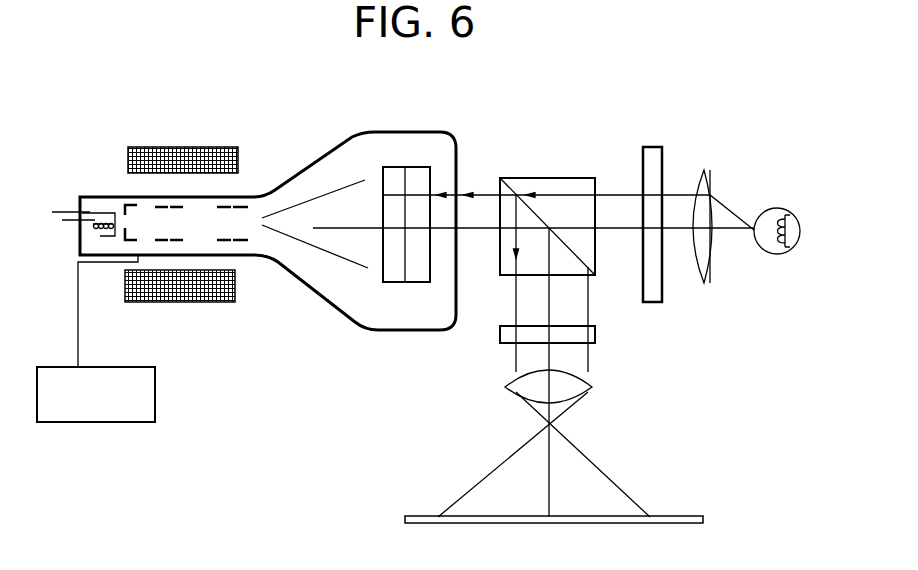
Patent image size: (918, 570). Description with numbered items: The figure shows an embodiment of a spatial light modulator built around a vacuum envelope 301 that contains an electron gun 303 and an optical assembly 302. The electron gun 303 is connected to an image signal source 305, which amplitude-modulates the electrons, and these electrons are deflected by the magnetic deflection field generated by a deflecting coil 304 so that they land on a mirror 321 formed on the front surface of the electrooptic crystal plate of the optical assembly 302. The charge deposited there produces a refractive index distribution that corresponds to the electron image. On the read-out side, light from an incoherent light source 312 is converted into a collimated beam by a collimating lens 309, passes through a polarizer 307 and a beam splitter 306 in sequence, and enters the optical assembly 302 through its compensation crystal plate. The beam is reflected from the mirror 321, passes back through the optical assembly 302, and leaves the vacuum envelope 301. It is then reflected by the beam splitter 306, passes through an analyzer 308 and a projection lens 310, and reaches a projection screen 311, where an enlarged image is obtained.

The envelope 301 is at (307, 168).
The optical assembly 302 is at (405, 167).
The electron gun 303 is at (114, 208).
The deflecting coil 304 is at (223, 147).
The image signal source 305 is at (157, 375).
The beam splitter 306 is at (548, 178).
The polarizer 307 is at (655, 147).
The analyzer 308 is at (598, 333).
The collimating lens 309 is at (706, 182).
The projection lens 310 is at (592, 388).
The projection screen 311 is at (695, 516).
The incoherent light source 312 is at (765, 210).
The mirror 321 is at (385, 179).